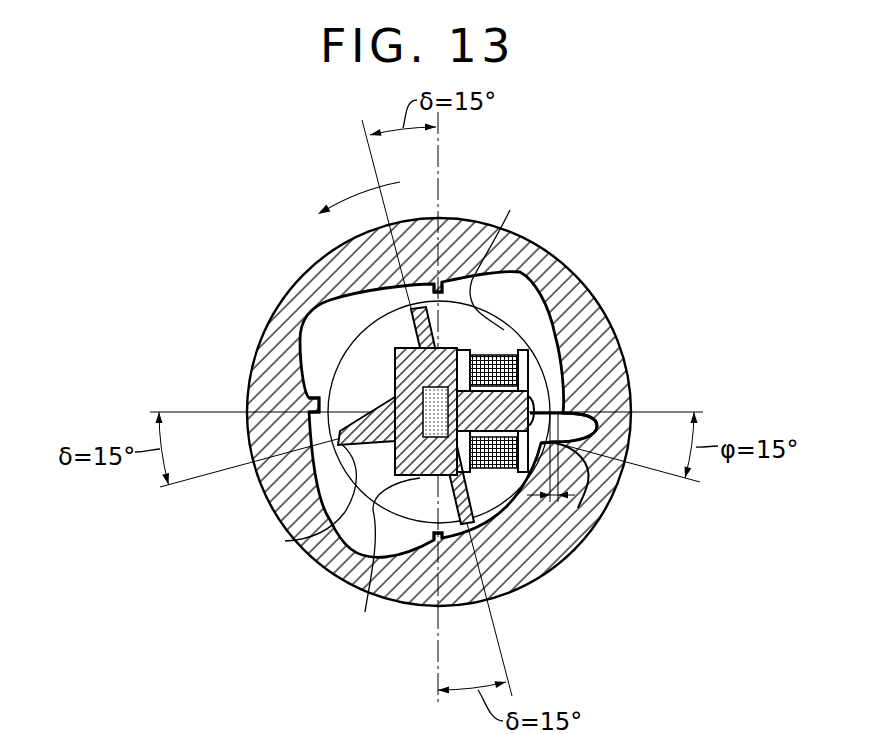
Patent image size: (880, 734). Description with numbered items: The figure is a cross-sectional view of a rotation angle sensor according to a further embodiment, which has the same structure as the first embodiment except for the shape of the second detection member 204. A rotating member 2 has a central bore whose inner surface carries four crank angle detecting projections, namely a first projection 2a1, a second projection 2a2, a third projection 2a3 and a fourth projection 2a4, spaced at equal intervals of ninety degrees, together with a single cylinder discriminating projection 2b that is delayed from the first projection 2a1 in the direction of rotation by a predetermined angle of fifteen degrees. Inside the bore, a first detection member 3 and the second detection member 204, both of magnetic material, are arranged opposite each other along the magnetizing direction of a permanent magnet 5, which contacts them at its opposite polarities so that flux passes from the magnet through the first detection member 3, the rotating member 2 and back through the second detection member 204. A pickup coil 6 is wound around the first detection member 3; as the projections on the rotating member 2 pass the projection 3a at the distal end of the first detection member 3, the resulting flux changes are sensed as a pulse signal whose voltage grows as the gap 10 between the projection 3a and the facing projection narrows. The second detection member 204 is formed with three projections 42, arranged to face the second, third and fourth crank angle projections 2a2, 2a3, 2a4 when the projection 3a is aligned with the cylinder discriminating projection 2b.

The rotating member 2 is at (528, 241).
The first projection 2a1 is at (572, 402).
The second projection 2a2 is at (430, 545).
The third projection 2a3 is at (310, 402).
The fourth projection 2a4 is at (448, 283).
The projection for discriminating the cylinders 2b is at (600, 515).
The first detection member 3 is at (545, 390).
The projection of the first detection member 3a is at (560, 392).
The permanent magnet 5 is at (428, 405).
The pickup coil 6 is at (497, 372).
The gap 10 is at (554, 500).
The projections 42 is at (394, 414).
The second detection member 204 is at (370, 396).